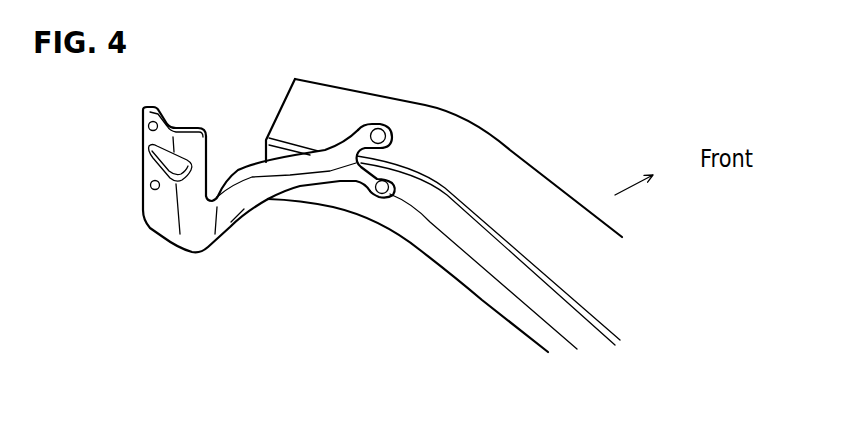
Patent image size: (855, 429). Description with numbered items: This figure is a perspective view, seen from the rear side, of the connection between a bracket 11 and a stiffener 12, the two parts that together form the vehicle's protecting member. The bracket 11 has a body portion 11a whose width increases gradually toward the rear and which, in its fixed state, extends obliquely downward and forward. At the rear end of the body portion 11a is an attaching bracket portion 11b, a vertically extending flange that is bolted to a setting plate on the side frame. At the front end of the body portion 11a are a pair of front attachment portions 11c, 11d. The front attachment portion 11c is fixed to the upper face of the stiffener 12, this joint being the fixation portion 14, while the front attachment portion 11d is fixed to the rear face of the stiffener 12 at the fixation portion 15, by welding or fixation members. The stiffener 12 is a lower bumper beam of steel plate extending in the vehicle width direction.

The bracket 11 is at (338, 192).
The body portion 11a is at (247, 191).
The attaching bracket portion 11b is at (163, 217).
The front attachment portion 11c is at (361, 137).
The front attachment portion 11d is at (366, 185).
The stiffener 12 is at (507, 168).
The fixation portion 14 is at (378, 134).
The fixation portion 15 is at (394, 196).